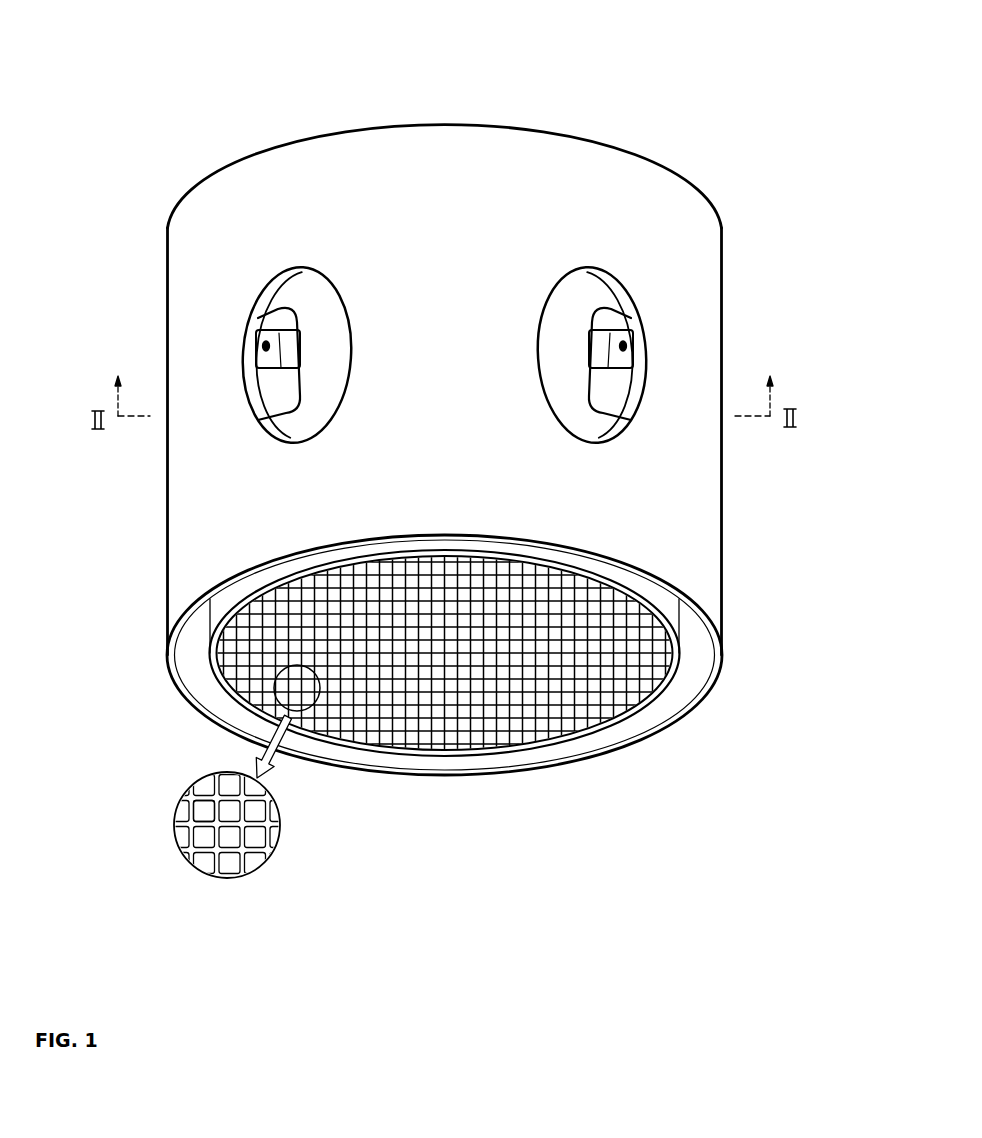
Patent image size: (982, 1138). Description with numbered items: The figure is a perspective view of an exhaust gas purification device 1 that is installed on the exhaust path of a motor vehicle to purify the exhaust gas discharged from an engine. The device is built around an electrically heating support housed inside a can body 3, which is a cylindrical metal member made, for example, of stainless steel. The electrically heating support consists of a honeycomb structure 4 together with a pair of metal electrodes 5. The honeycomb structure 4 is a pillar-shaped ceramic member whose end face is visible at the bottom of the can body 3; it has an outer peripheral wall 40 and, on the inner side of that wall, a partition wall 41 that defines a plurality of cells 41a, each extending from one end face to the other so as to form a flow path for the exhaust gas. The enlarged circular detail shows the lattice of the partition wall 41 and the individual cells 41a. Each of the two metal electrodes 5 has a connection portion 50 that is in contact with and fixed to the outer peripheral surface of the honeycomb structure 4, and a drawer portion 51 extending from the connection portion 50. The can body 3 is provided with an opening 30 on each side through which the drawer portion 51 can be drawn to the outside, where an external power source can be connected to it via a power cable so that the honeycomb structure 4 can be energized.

The exhaust gas purification device 1 is at (328, 110).
The can body 3 is at (722, 242).
The opening 30 is at (272, 273).
The honeycomb structure 4 is at (680, 672).
The outer peripheral wall 40 is at (213, 667).
The partition wall 41 is at (212, 787).
The cell 41a is at (205, 812).
The metal electrode 5 is at (103, 256).
The connection portion 50 is at (262, 320).
The drawer portion 51 is at (255, 357).